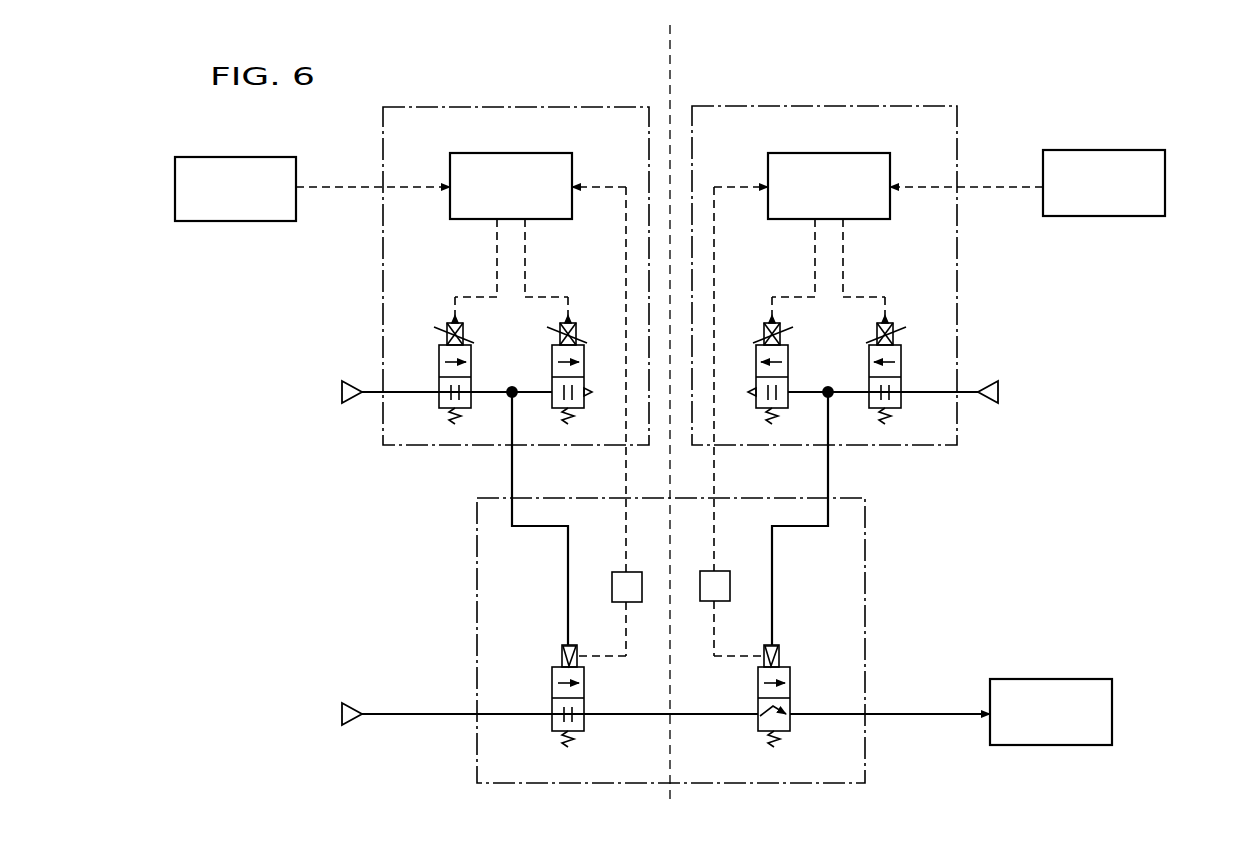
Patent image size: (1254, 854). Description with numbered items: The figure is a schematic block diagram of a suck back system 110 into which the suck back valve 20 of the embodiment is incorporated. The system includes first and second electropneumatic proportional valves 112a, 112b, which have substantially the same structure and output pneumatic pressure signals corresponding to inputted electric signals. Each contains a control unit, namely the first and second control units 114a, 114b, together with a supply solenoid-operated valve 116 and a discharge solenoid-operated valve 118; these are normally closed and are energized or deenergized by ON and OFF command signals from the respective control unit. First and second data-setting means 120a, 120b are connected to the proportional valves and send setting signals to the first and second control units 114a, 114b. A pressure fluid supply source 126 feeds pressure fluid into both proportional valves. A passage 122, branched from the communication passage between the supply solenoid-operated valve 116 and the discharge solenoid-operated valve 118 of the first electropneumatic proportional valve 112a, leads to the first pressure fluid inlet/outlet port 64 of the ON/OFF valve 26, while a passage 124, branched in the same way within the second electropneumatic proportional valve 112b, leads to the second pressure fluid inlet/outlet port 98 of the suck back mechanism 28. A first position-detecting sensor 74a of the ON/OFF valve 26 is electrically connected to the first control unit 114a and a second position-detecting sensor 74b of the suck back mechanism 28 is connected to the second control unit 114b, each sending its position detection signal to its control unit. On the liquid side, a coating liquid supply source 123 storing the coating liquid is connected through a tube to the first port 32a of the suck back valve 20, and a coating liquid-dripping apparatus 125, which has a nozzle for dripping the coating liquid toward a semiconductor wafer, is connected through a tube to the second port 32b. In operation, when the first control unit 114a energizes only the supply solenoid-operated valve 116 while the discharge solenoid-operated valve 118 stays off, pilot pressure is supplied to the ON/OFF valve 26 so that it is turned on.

The suck back system 110 is at (1130, 90).
The first electropneumatic proportional valve 112a is at (506, 105).
The second electropneumatic proportional valve 112b is at (853, 105).
The first control unit 114a is at (558, 140).
The second control unit 114b is at (859, 152).
The supply solenoid-operated valve 116 is at (474, 351).
The discharge solenoid-operated valve 118 is at (586, 351).
The first data-setting means 120a is at (271, 154).
The second data-setting means 120b is at (1132, 150).
The passage 122 is at (511, 477).
The passage 124 is at (832, 477).
The pressure fluid supply source 126 is at (352, 382).
The suck back valve 20 is at (866, 565).
The first position-detecting sensor 74a is at (613, 572).
The second position-detecting sensor 74b is at (727, 572).
The first pressure fluid inlet/outlet port 64 is at (563, 645).
The second pressure fluid inlet/outlet port 98 is at (783, 645).
The ON/OFF valve 26 is at (551, 671).
The suck back mechanism 28 is at (792, 671).
The coating liquid supply source 123 is at (352, 704).
The first port 32a is at (476, 713).
The second port 32b is at (868, 713).
The coating liquid-dripping apparatus 125 is at (1086, 678).